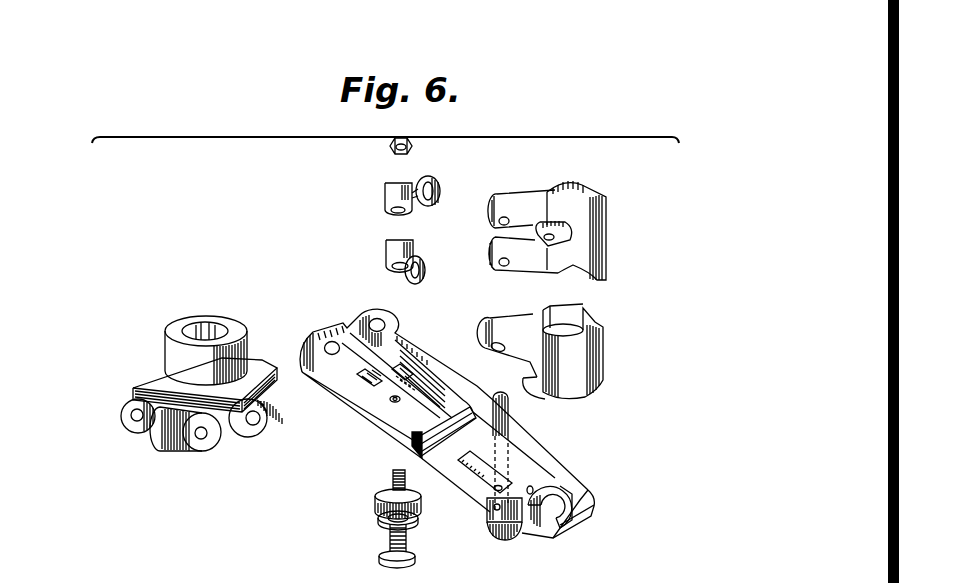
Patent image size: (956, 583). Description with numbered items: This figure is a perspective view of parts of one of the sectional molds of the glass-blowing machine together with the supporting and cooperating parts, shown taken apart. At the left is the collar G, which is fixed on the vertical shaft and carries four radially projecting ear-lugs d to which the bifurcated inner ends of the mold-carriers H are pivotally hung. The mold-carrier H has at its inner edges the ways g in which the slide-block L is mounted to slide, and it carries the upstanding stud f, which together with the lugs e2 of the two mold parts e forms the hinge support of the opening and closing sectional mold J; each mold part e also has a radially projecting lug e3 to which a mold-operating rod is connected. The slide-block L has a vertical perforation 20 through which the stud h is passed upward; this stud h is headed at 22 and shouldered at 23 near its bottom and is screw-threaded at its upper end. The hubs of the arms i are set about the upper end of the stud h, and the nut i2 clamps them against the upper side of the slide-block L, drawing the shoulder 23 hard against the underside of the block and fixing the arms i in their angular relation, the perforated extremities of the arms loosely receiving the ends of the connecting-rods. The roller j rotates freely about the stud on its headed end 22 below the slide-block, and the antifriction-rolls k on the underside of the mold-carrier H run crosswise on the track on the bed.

The collar G is at (166, 334).
The ear-lugs d is at (122, 421).
The mold-carrier H is at (463, 388).
The ways g is at (365, 382).
The slide-block L is at (393, 378).
The vertical perforation 20 is at (395, 404).
The upstanding stud f is at (514, 410).
The antifriction-rolls k is at (522, 533).
The roller j is at (377, 497).
The stud h is at (386, 524).
The shoulder 23 is at (408, 531).
The head 22 is at (416, 558).
The nut i2 is at (407, 150).
The arms i is at (385, 187).
The mold parts e is at (548, 281).
The lugs e2 is at (517, 327).
The radially-projecting lug e3 is at (559, 229).
The sectional mold J is at (626, 293).